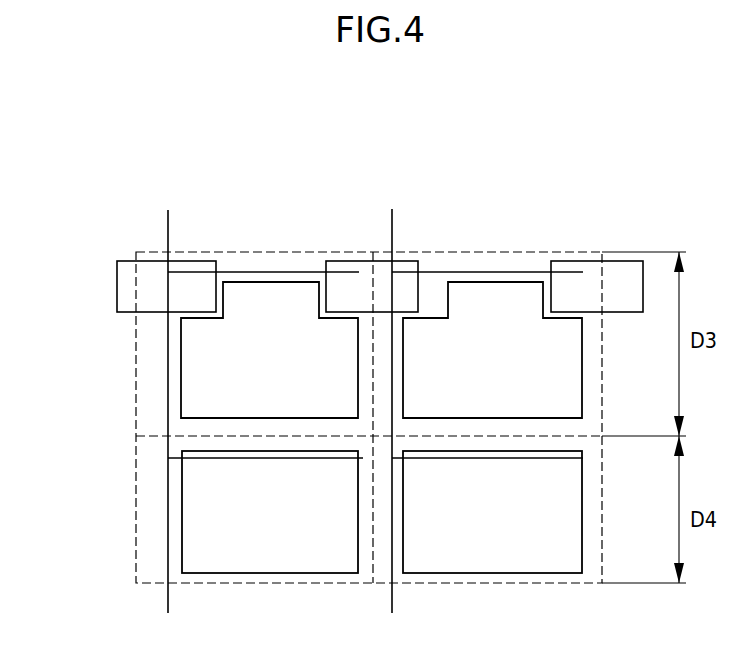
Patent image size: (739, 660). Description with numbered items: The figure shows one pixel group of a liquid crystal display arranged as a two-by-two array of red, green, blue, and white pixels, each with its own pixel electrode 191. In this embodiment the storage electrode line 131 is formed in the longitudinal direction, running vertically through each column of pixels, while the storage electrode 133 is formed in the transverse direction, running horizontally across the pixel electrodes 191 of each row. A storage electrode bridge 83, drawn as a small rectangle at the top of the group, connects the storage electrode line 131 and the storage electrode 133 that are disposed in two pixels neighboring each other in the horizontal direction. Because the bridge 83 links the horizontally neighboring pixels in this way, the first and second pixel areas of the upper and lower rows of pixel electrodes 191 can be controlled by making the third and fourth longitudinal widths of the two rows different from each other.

The storage electrode bridge 83 is at (122, 260).
The storage electrode line 131 is at (390, 218).
The storage electrode 133 is at (457, 271).
The pixel electrode 191 is at (181, 341).